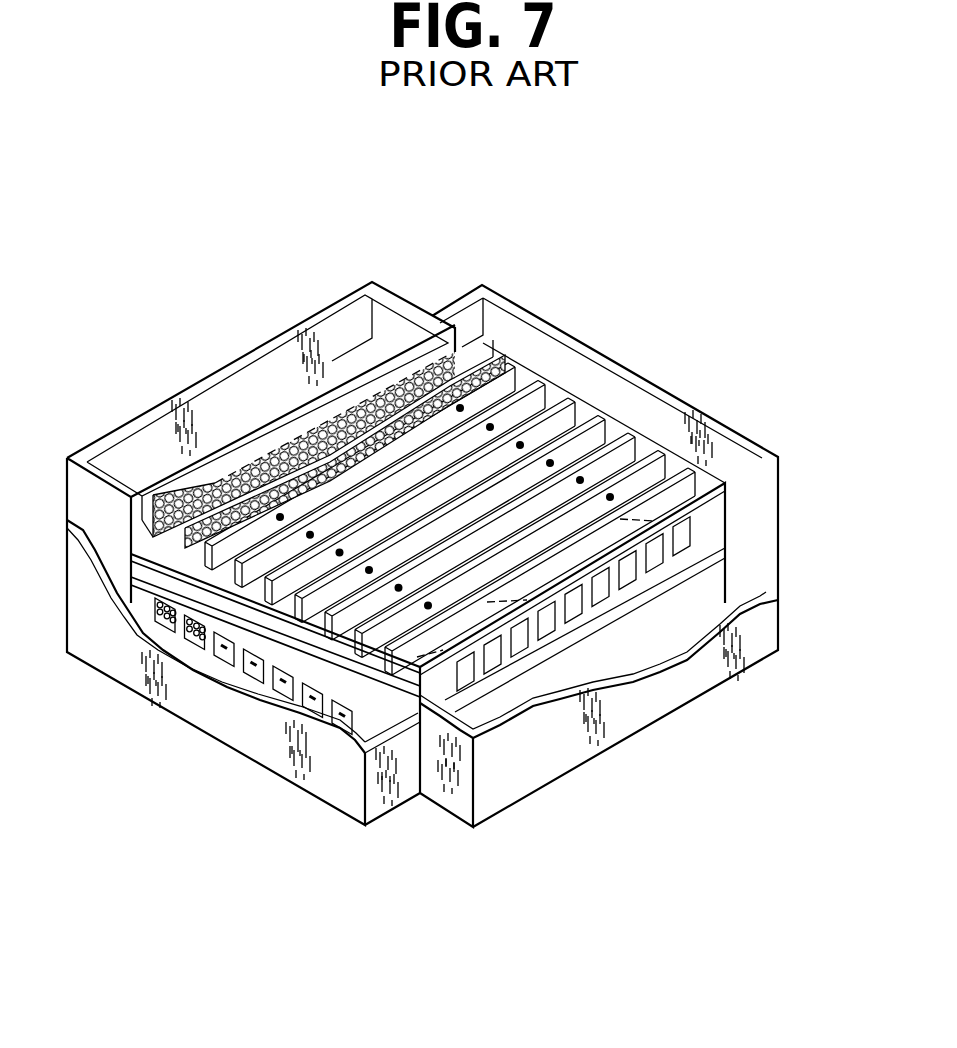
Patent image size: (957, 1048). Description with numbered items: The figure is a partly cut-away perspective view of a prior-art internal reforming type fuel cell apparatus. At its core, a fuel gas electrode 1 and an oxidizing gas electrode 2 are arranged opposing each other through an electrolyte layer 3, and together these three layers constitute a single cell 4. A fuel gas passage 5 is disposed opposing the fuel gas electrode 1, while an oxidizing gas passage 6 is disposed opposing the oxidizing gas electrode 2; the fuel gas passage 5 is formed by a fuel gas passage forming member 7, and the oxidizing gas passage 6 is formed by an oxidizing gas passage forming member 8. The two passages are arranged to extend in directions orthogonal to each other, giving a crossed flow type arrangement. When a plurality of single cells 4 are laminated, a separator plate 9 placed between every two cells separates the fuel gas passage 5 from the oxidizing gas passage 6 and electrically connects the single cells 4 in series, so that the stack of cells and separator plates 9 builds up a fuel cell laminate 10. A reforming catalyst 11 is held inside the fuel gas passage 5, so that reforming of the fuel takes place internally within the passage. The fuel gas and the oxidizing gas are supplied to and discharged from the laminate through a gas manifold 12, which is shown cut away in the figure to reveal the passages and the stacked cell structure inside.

The fuel gas electrode 1 is at (725, 557).
The oxidizing gas electrode 2 is at (725, 490).
The electrolyte layer 3 is at (725, 533).
The single cell 4 is at (514, 584).
The fuel gas passage 5 is at (345, 720).
The oxidizing gas passage 6 is at (518, 655).
The fuel gas passage forming member 7 is at (507, 382).
The oxidizing gas passage forming member 8 is at (478, 675).
The separator plate 9 is at (142, 518).
The fuel cell laminate 10 is at (697, 483).
The reforming catalyst 11 is at (505, 376).
The gas manifold 12 is at (205, 376).